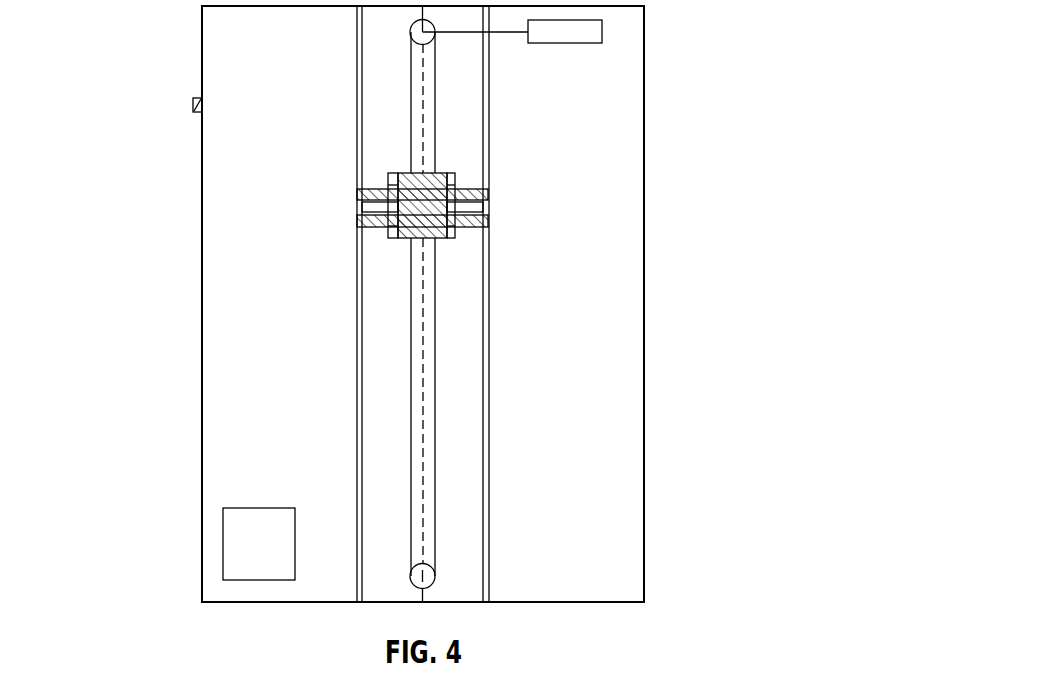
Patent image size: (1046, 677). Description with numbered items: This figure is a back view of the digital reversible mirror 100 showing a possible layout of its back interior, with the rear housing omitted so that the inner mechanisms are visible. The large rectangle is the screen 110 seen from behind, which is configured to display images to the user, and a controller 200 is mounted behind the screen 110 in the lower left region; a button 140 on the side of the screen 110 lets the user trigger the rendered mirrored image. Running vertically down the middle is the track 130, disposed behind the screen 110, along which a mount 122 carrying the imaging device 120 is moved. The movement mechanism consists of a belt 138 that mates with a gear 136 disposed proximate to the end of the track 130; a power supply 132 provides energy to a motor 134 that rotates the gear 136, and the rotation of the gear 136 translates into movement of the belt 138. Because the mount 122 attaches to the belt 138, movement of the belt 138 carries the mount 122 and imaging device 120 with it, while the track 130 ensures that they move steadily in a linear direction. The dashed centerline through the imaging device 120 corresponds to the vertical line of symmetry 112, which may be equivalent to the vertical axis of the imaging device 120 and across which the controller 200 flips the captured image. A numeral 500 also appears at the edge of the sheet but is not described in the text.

The digital reversible mirror 100 is at (115, 39).
The screen 110 is at (645, 300).
The vertical line of symmetry 112 is at (423, 320).
The imaging device 120 is at (455, 178).
The mount 122 is at (357, 221).
The track 130 is at (490, 445).
The power supply 132 is at (602, 32).
The motor 134 is at (435, 568).
The gear 136 is at (436, 577).
The belt 138 is at (411, 337).
The button 140 is at (195, 105).
The controller 200 is at (223, 545).
The adjacent figure reference 500 is at (800, 676).